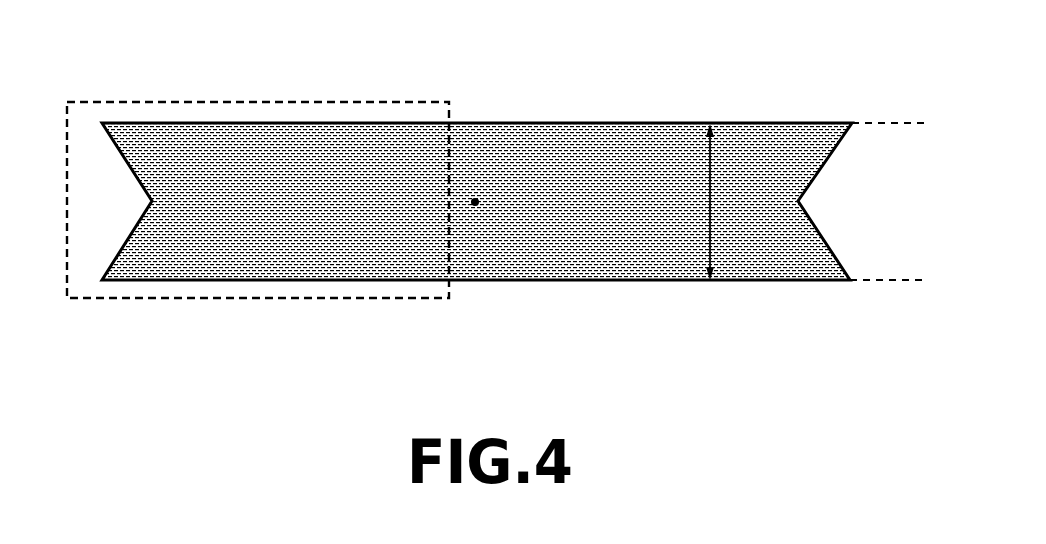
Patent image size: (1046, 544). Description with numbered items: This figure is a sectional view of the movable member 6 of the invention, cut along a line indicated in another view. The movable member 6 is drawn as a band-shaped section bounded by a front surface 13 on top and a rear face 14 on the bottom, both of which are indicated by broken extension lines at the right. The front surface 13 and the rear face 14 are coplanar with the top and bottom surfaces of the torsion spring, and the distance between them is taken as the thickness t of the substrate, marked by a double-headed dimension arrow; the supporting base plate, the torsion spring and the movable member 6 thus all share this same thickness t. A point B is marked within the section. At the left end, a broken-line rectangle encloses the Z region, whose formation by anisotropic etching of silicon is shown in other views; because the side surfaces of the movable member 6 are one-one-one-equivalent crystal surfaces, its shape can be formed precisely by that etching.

The movable member 6 is at (588, 135).
The front surface 13 is at (892, 122).
The rear face 14 is at (892, 278).
The Z region Z is at (282, 102).
The point B is at (490, 206).
The thickness t is at (716, 202).